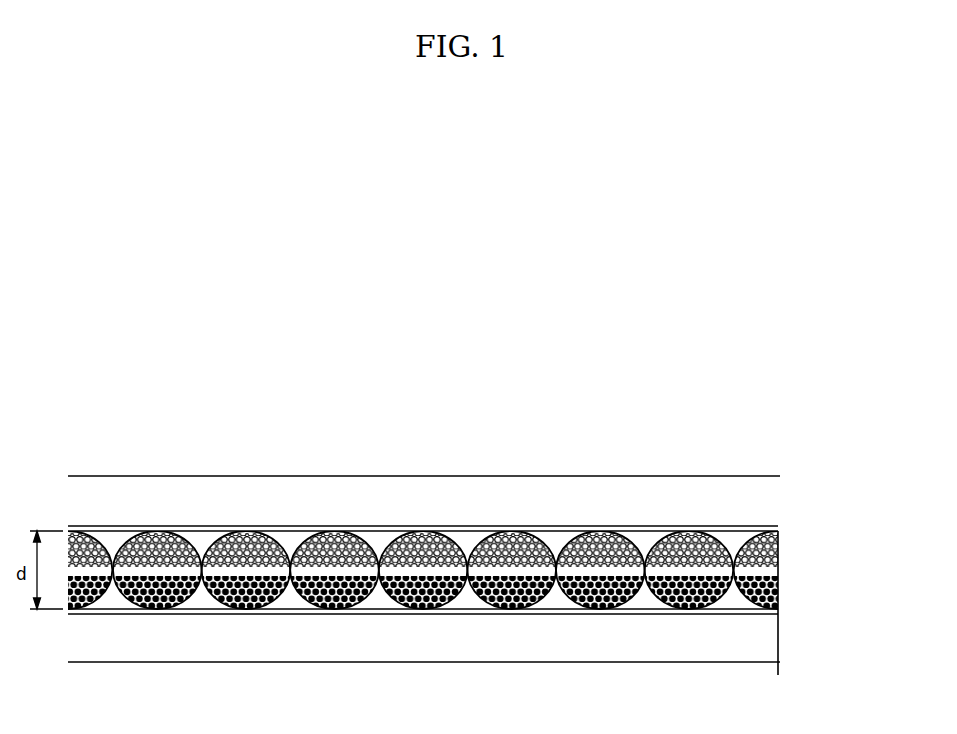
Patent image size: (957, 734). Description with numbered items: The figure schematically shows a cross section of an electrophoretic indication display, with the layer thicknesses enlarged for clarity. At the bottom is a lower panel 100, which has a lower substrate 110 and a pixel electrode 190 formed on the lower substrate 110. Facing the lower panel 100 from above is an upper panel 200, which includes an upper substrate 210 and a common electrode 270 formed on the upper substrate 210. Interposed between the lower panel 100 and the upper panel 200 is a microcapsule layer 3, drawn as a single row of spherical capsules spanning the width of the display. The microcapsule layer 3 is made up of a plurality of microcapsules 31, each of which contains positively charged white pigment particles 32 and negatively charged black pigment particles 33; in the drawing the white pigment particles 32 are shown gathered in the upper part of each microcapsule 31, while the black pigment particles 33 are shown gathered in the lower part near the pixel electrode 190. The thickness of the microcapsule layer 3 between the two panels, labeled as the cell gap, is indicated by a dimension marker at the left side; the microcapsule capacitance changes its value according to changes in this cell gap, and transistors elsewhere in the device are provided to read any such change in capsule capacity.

The upper panel 200 is at (490, 507).
The upper substrate 210 is at (772, 495).
The common electrode 270 is at (778, 532).
The microcapsule layer 3 is at (460, 567).
The microcapsules 31 is at (124, 538).
The positively charged white pigment particles 32 is at (236, 538).
The negatively charged black pigment particles 33 is at (238, 612).
The lower panel 100 is at (490, 603).
The pixel electrode 190 is at (778, 613).
The lower substrate 110 is at (772, 650).